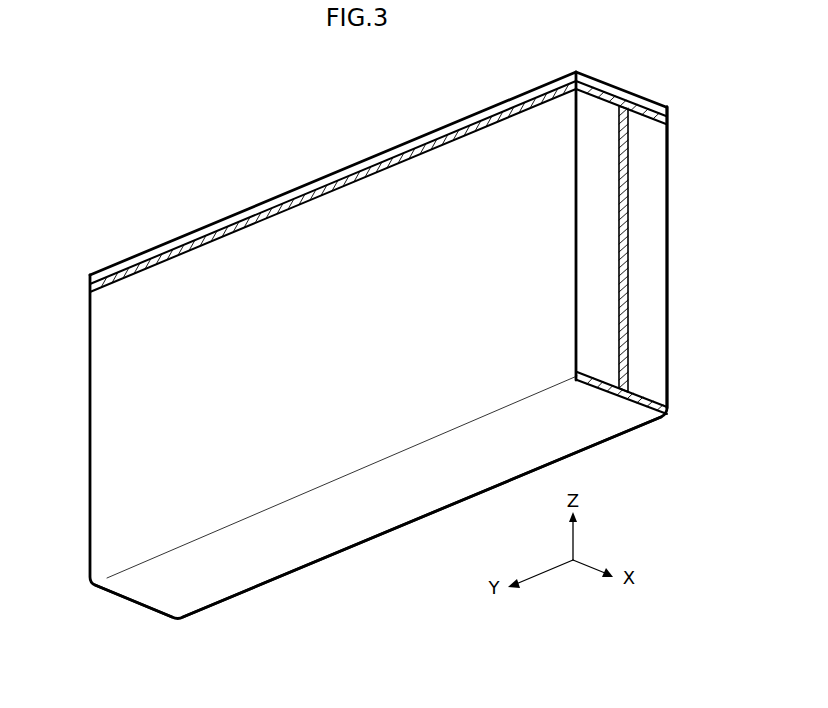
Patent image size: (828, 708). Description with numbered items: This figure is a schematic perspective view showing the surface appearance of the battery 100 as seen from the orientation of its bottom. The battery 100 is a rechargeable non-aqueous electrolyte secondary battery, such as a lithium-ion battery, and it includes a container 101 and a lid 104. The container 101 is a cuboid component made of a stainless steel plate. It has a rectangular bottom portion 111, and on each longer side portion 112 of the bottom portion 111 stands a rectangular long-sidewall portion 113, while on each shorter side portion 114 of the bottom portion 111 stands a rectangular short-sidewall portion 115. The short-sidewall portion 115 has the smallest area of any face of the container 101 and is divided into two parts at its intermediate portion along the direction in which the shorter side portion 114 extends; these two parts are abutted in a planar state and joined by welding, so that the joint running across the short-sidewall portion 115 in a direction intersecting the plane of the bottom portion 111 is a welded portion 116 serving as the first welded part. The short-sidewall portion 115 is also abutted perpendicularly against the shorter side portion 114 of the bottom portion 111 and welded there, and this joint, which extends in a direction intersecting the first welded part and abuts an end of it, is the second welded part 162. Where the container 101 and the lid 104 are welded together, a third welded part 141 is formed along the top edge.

The battery 100 is at (134, 181).
The container 101 is at (105, 436).
The lid 104 is at (382, 151).
The bottom portion 111 is at (411, 507).
The longer side portion 112 is at (320, 487).
The long-sidewall portion 113 is at (251, 342).
The shorter side portion 114 is at (133, 603).
The short-sidewall portion 115 is at (651, 337).
The welded portion 116 is at (629, 258).
The second welded part 162 is at (655, 397).
The third welded part 141 is at (358, 183).